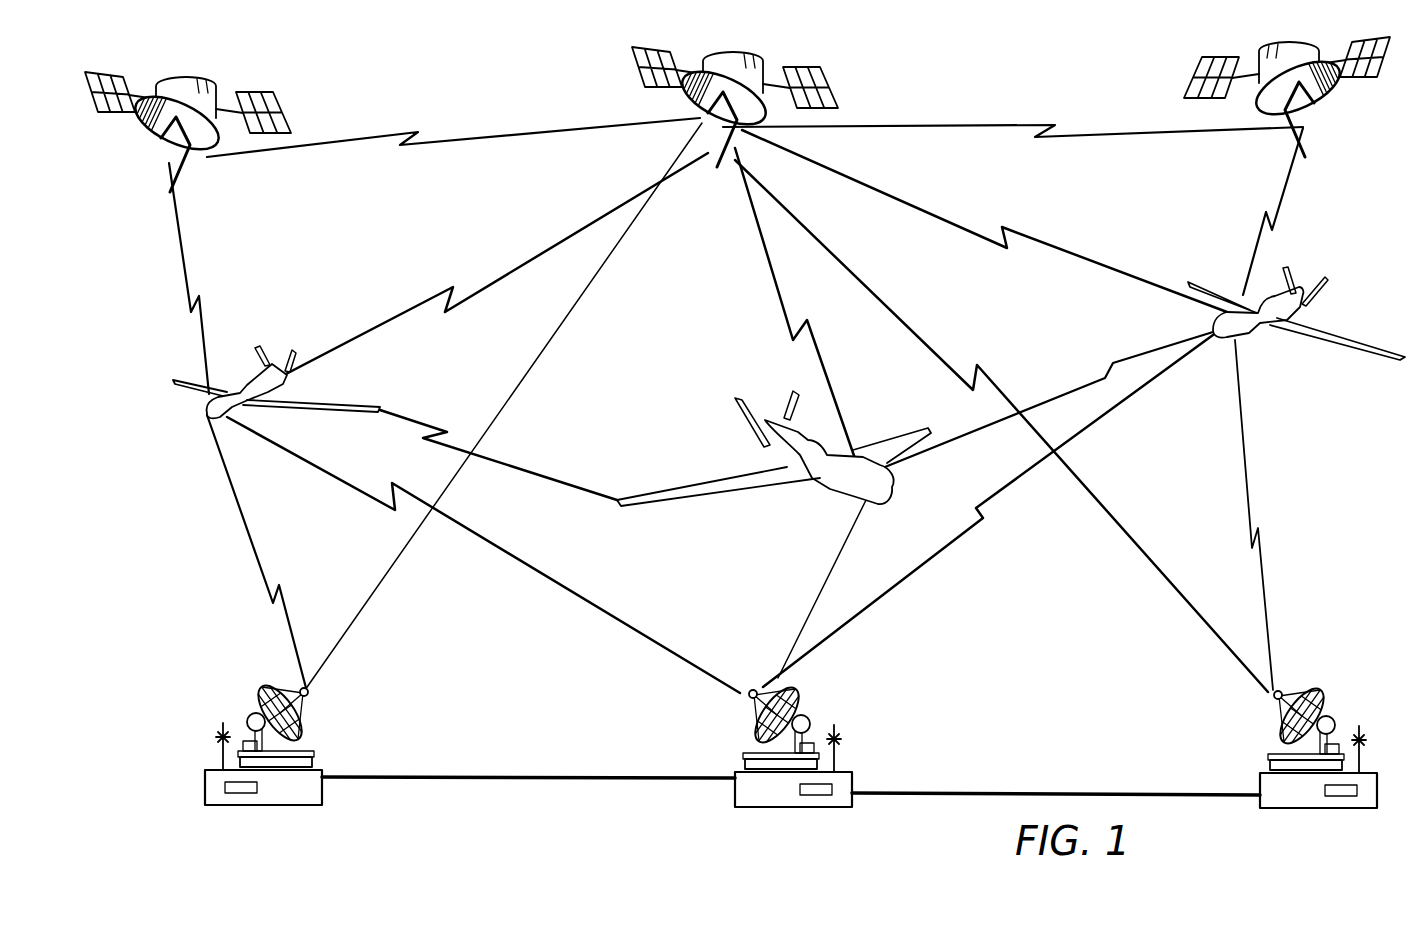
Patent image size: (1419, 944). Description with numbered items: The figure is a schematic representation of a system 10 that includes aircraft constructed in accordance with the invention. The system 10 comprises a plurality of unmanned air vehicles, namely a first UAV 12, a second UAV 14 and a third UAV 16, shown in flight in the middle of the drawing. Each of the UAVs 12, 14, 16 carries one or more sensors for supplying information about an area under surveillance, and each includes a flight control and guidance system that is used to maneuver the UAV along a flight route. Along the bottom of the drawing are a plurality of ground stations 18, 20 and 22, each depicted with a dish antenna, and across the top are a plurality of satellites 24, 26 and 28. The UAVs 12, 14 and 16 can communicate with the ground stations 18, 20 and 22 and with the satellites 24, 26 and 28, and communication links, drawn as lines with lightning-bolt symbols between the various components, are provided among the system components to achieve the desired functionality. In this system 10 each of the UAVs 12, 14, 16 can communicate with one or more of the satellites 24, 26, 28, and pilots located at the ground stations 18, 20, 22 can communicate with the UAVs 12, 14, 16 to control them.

The system 10 is at (685, 338).
The unmanned air vehicle 12 is at (310, 395).
The unmanned air vehicle 14 is at (757, 482).
The unmanned air vehicle 16 is at (1263, 332).
The ground station 18 is at (275, 805).
The ground station 20 is at (808, 807).
The ground station 22 is at (1295, 808).
The satellite 24 is at (193, 85).
The satellite 26 is at (745, 58).
The satellite 28 is at (1280, 50).